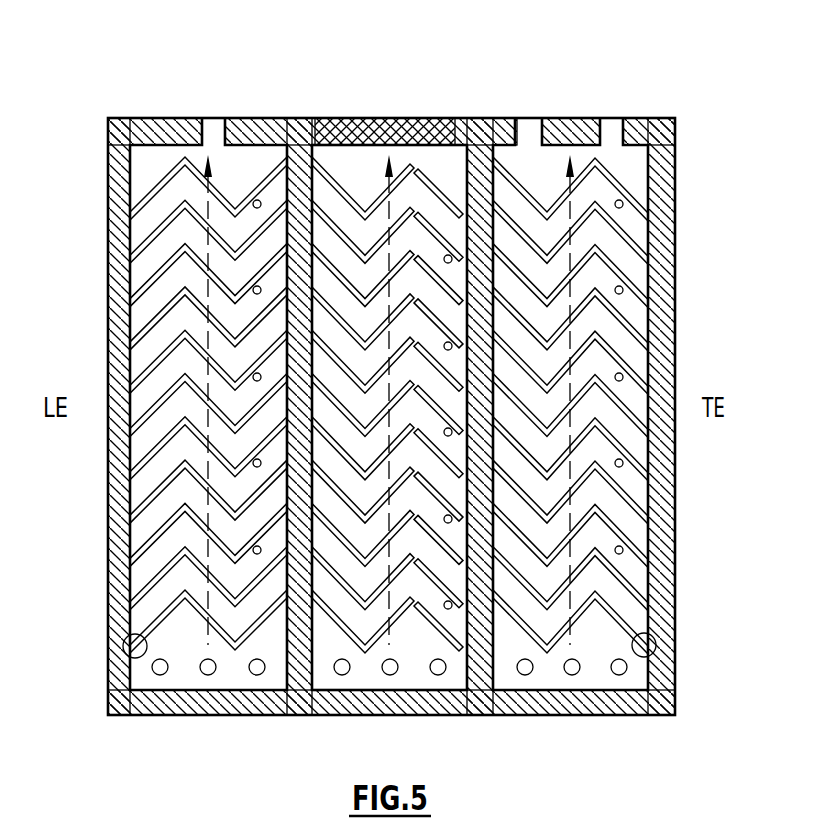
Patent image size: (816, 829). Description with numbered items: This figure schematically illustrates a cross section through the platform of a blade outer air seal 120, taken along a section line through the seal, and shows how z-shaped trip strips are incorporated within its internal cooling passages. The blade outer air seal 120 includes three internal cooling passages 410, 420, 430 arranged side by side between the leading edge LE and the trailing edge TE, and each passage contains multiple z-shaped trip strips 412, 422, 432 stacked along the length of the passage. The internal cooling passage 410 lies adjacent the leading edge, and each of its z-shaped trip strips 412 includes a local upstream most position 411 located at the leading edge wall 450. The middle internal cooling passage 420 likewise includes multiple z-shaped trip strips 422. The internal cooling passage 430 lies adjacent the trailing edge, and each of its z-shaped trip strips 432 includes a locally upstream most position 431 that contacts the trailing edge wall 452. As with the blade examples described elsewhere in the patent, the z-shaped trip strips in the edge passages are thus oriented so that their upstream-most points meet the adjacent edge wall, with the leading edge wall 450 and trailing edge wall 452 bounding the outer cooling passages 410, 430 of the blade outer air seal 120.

The blade outer air seal 120 is at (288, 82).
The internal cooling passage 410 is at (195, 690).
The local upstream most position 411 is at (126, 654).
The z-shaped trip strips 412 is at (156, 182).
The internal cooling passage 420 is at (360, 690).
The z-shaped trip strips 422 is at (336, 173).
The internal cooling passage 430 is at (587, 690).
The locally upstream most position 431 is at (655, 651).
The z-shaped trip strips 432 is at (624, 187).
The leading edge wall 450 is at (108, 600).
The trailing edge wall 452 is at (674, 572).